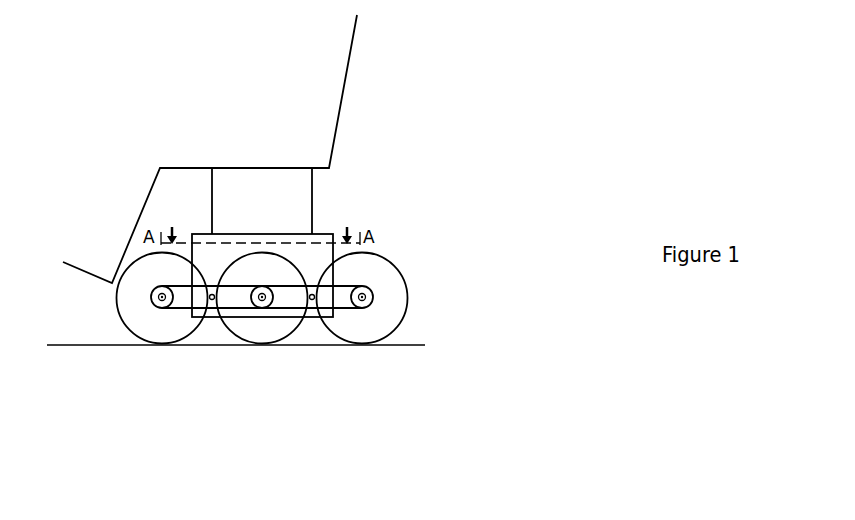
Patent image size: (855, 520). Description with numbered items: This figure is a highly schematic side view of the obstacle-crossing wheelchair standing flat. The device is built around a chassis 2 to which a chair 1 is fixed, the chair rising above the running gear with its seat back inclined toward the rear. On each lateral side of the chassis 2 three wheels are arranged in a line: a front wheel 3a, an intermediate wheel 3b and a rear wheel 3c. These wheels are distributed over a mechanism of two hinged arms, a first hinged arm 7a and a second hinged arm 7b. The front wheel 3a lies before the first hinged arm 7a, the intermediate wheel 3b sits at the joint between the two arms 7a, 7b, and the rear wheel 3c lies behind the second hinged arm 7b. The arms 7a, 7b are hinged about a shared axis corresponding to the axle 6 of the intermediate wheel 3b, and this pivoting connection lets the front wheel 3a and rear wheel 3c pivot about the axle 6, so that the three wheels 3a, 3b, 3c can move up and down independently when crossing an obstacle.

The chair 1 is at (346, 96).
The chassis 2 is at (320, 229).
The front wheel 3a is at (113, 312).
The intermediate wheel 3b is at (301, 332).
The rear wheel 3c is at (406, 322).
The axle 6 is at (263, 307).
The first hinged arm 7a is at (181, 293).
The second hinged arm 7b is at (342, 294).